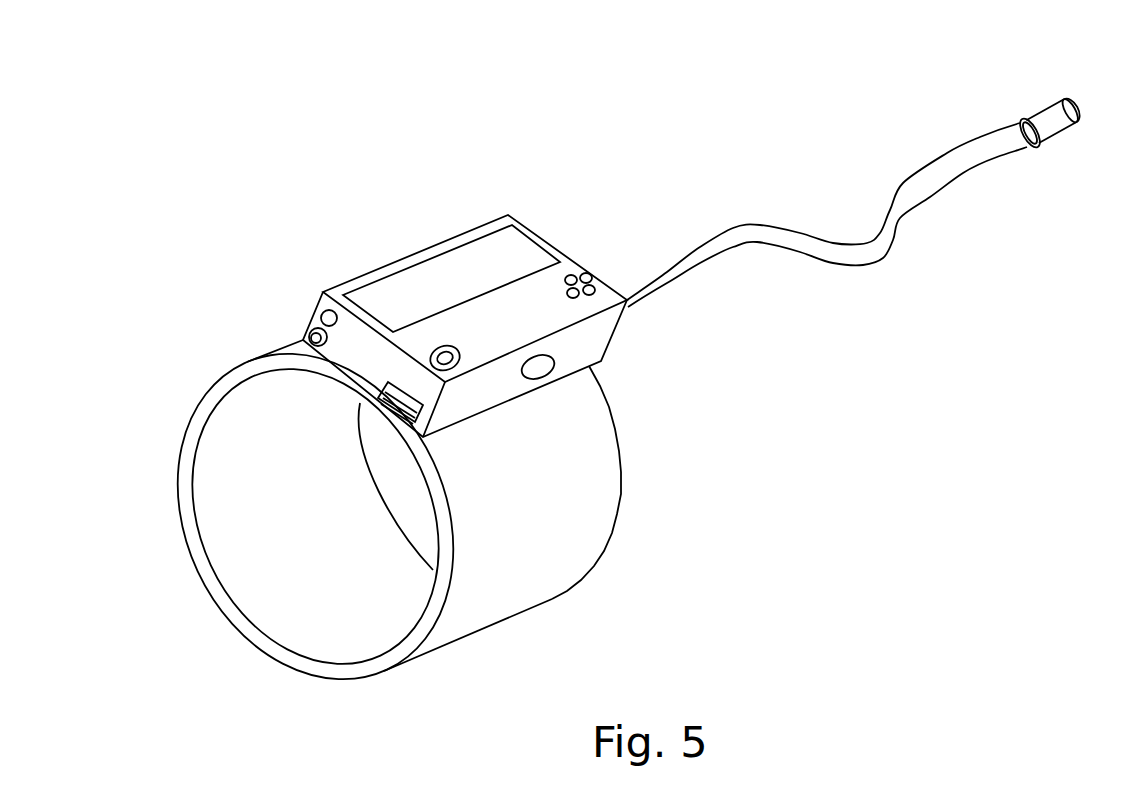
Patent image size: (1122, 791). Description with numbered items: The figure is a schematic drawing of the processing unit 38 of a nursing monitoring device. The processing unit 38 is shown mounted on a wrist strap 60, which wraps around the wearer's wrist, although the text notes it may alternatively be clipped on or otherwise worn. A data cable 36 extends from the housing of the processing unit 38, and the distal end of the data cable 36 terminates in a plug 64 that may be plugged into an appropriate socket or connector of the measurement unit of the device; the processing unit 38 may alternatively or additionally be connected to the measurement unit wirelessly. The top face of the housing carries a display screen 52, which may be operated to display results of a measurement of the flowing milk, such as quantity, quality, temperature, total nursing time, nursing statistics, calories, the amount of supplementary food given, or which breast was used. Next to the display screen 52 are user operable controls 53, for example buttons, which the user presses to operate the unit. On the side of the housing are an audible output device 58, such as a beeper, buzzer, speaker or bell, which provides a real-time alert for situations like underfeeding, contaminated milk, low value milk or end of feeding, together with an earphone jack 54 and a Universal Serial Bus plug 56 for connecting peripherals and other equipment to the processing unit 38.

The processing unit 38 is at (318, 137).
The data cable 36 is at (823, 243).
The display screen 52 is at (517, 243).
The user operable controls 53 is at (593, 278).
The earphone jack 54 is at (309, 338).
The Universal Serial Bus (USB) plug 56 is at (378, 402).
The audible output device 58 is at (546, 371).
The wrist strap 60 is at (533, 565).
The plug 64 is at (1047, 108).